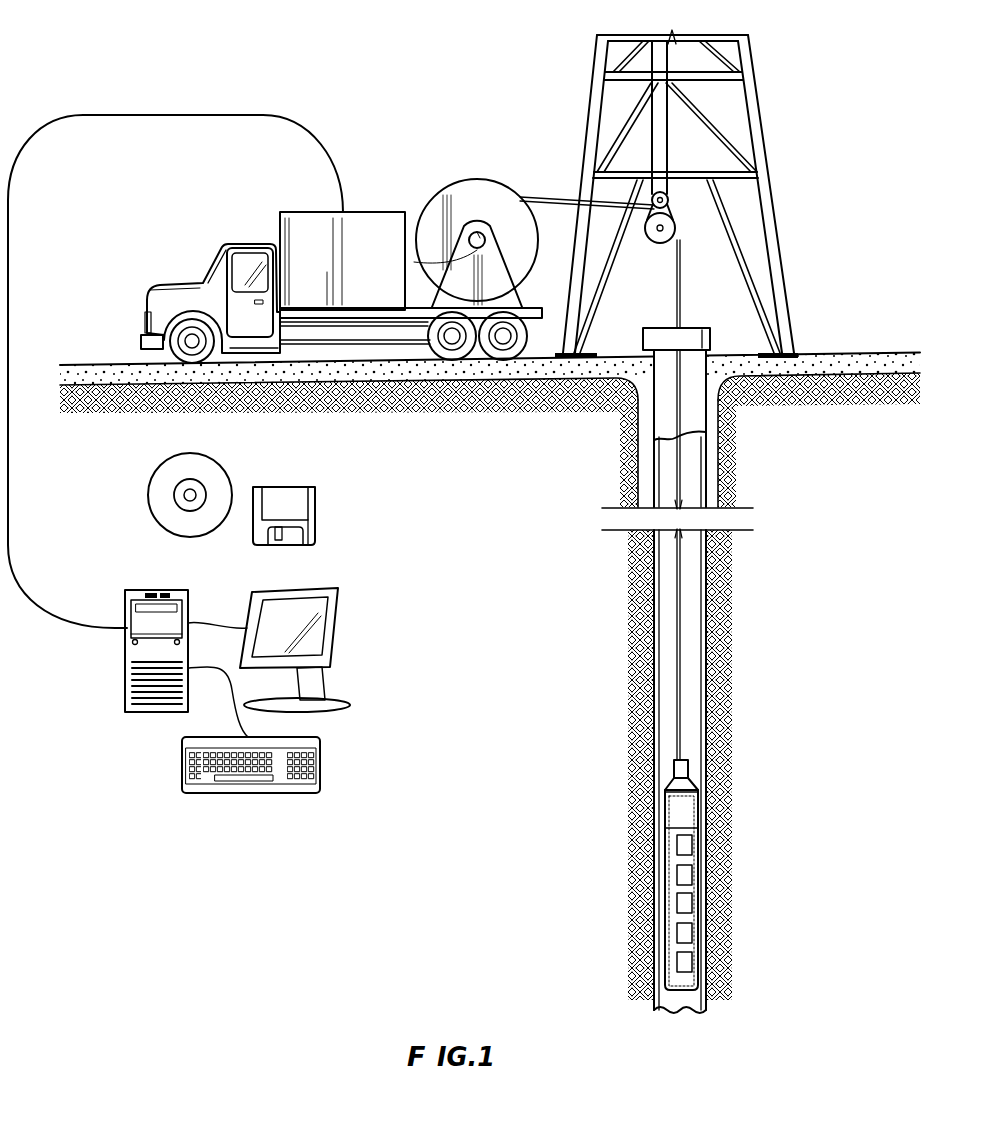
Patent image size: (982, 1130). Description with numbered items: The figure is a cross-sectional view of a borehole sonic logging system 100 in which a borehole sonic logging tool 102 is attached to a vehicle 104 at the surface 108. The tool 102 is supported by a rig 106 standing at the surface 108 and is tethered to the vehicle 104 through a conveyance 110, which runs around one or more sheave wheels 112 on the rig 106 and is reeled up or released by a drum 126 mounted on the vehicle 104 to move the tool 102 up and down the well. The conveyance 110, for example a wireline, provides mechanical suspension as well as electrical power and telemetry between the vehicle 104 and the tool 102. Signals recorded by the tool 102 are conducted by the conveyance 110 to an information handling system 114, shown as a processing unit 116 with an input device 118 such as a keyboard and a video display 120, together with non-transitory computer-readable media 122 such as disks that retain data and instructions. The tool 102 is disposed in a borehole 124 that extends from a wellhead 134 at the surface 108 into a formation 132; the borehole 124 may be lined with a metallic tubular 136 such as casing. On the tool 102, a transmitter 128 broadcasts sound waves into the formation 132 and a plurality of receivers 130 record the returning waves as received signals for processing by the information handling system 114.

The borehole sonic logging system 100 is at (124, 58).
The borehole sonic logging tool 102 is at (632, 834).
The vehicle 104 is at (282, 212).
The rig 106 is at (760, 115).
The surface 108 is at (826, 353).
The conveyance 110 is at (677, 565).
The sheave wheels 112 is at (645, 238).
The information handling system 114 is at (137, 815).
The processing unit 116 is at (142, 590).
The input device 118 is at (320, 765).
The video display 120 is at (335, 628).
The non-transitory computer-readable media 122 is at (262, 487).
The borehole 124 is at (703, 478).
The drum 126 is at (480, 180).
The transmitter 128 is at (693, 845).
The receivers 130 is at (692, 958).
The formation 132 is at (908, 585).
The wellhead 134 is at (722, 308).
The tubular 136 is at (665, 422).